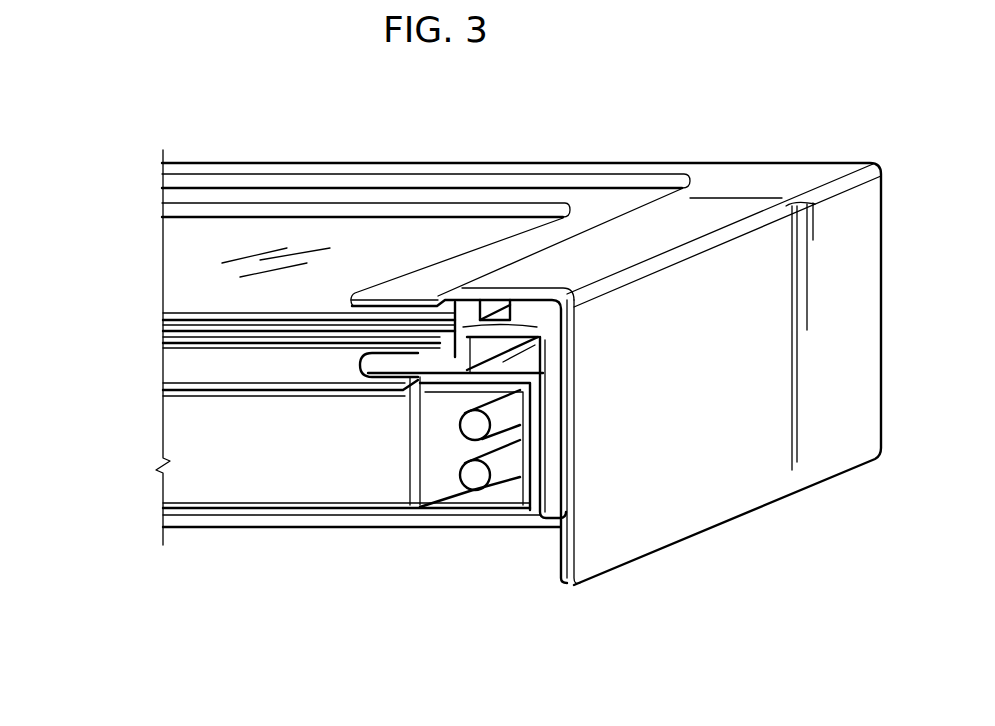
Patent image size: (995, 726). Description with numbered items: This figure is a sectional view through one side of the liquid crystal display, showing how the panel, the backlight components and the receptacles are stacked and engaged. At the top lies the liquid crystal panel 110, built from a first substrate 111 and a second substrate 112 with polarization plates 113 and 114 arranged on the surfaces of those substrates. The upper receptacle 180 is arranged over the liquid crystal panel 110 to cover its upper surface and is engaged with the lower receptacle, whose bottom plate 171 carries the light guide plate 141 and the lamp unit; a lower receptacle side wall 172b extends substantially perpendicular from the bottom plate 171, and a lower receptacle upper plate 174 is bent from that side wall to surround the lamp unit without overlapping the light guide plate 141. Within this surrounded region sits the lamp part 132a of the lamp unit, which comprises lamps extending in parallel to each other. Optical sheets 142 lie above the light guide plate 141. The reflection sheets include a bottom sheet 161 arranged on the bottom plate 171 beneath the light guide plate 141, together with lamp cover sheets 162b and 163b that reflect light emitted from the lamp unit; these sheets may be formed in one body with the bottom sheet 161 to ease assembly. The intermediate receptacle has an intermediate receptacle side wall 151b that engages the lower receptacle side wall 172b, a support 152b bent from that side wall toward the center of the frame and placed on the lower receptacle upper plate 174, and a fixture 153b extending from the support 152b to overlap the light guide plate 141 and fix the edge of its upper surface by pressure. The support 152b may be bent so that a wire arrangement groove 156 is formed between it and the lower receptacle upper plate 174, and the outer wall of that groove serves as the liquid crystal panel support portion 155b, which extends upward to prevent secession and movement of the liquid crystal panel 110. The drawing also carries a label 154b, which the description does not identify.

The liquid crystal panel 110 is at (232, 328).
The polarization plate 114 is at (163, 313).
The second substrate 112 is at (163, 322).
The first substrate 111 is at (163, 331).
The polarization plate 113 is at (163, 345).
The optical sheets 142 is at (163, 390).
The light guide plate 141 is at (175, 432).
The bottom sheet 161 is at (163, 510).
The bottom plate 171 is at (163, 528).
The upper receptacle 180 is at (738, 172).
The liquid crystal panel support portion 155b is at (535, 303).
The wire arrangement groove 156 is at (505, 352).
The support 152b is at (513, 367).
The lower receptacle upper plate 174 is at (515, 415).
The lower receptacle side wall 172b is at (528, 440).
The lamp cover sheet 162b is at (528, 462).
The intermediate receptacle side wall 151b is at (540, 488).
The fixture 153b is at (372, 397).
The vertical wall 154b is at (410, 400).
The lamp cover sheet 163b is at (432, 397).
The lamp part 132a is at (473, 497).